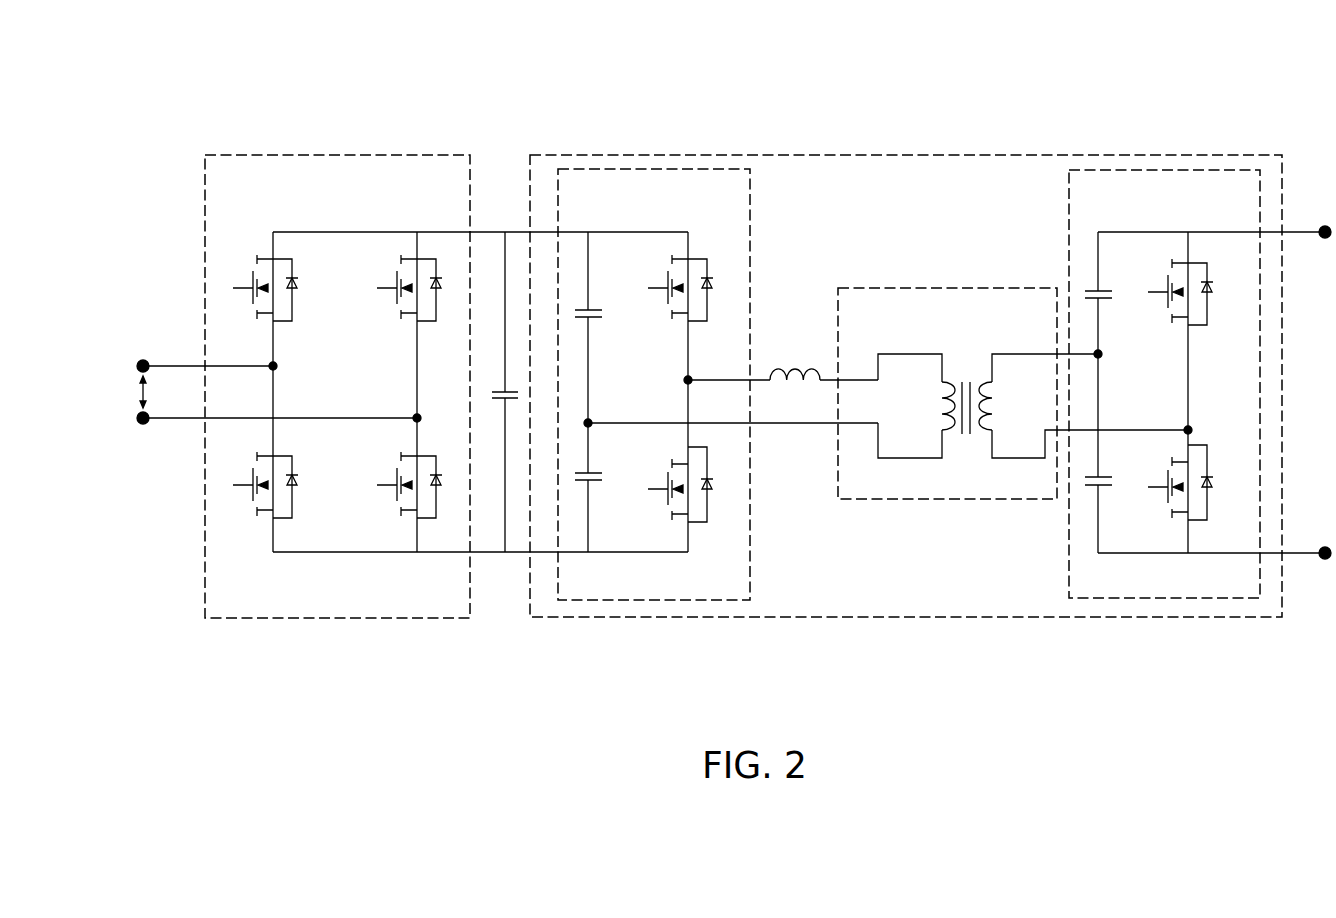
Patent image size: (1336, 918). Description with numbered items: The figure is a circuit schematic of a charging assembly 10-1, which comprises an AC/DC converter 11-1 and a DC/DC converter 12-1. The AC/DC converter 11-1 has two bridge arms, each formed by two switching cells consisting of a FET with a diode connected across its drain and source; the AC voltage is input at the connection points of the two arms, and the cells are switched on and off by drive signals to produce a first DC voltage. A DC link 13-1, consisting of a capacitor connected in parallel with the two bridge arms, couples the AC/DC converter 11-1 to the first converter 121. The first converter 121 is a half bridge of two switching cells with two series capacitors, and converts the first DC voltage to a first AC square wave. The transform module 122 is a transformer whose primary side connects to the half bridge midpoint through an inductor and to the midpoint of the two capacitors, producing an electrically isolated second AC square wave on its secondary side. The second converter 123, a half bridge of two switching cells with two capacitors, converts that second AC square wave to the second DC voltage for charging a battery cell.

The charging assembly 10-1 is at (305, 63).
The AC/DC converter 11-1 is at (295, 618).
The DC/DC converter 12-1 is at (613, 618).
The DC link 13-1 is at (505, 512).
The first converter 121 is at (655, 169).
The transform module 122 is at (947, 288).
The second converter 123 is at (1173, 170).